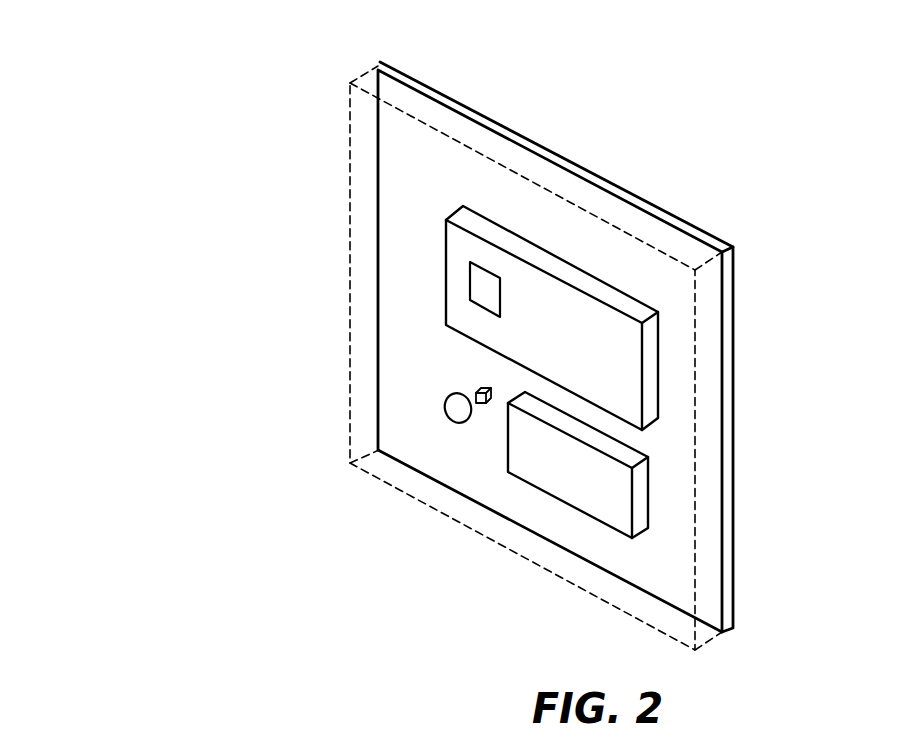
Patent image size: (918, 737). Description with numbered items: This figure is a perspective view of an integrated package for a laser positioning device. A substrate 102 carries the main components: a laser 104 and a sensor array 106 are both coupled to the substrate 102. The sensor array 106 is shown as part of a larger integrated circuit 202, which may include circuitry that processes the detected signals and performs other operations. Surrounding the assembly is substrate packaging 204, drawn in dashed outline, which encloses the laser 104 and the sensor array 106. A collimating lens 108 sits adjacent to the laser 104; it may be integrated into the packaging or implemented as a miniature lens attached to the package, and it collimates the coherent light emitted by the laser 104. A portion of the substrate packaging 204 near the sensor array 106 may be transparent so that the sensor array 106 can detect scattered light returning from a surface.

The substrate 102 is at (506, 126).
The laser 104 is at (474, 392).
The sensor array 106 is at (470, 279).
The collimating lens 108 is at (452, 423).
The integrated circuit 202 is at (552, 318).
The substrate packaging 204 is at (513, 543).